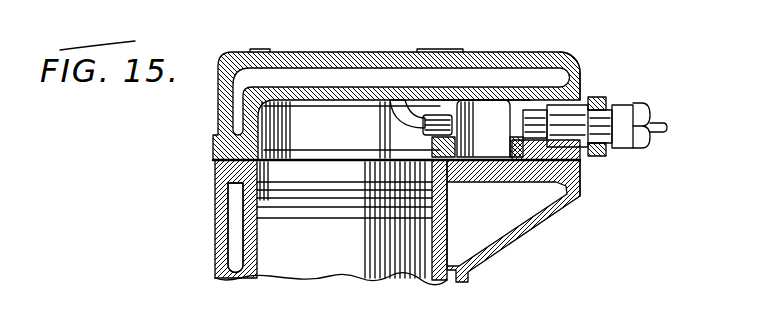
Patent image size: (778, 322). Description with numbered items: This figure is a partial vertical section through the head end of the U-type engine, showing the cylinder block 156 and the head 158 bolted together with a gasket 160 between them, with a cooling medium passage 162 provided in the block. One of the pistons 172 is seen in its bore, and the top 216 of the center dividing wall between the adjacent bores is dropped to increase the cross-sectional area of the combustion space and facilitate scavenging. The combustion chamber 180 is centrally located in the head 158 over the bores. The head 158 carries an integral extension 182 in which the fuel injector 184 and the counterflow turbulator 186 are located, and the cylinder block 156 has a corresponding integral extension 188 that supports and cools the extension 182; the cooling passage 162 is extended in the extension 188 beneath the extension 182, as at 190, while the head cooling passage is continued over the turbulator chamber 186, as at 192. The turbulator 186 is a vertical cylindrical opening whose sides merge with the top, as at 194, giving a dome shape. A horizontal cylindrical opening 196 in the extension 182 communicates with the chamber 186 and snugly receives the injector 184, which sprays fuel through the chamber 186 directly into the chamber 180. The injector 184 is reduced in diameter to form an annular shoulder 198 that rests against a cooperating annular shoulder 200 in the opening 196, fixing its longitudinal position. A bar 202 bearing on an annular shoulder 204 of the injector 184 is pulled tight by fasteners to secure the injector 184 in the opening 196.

The cylinder block 156 is at (216, 178).
The head 158 is at (557, 58).
The gasket 160 is at (216, 162).
The cooling medium passage 162 is at (235, 197).
The piston 172 is at (280, 258).
The combustion chamber 180 is at (314, 115).
The integral extension 182 is at (602, 98).
The fuel injector 184 is at (624, 106).
The counterflow turbulator 186 is at (474, 97).
The integral extension 188 is at (585, 178).
The extended cooling passage 190 is at (513, 219).
The continued passage 192 is at (581, 80).
The merging sides and top 194 is at (446, 120).
The cylindrical opening 196 is at (574, 160).
The annular shoulder 198 is at (526, 145).
The annular shoulder 200 is at (524, 120).
The bar 202 is at (598, 115).
The annular shoulder 204 is at (651, 110).
The top of center dividing wall 216 is at (398, 120).